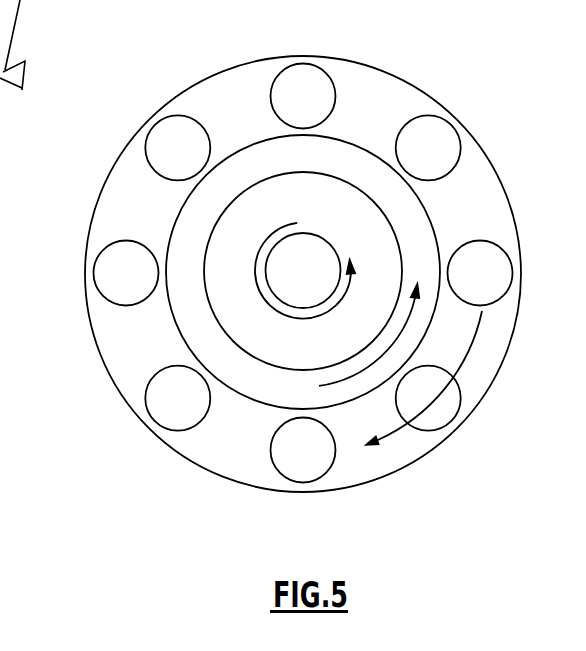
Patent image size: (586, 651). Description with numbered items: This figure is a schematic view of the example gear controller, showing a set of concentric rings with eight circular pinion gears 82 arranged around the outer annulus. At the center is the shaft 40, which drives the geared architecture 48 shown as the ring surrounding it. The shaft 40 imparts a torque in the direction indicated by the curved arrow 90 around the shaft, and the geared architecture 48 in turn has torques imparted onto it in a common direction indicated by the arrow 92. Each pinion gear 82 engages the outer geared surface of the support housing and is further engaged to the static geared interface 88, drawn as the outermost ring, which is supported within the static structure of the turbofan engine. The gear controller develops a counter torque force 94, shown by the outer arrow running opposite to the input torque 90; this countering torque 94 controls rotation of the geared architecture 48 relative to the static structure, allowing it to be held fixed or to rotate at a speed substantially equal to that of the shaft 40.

The shaft 40 is at (326, 242).
The geared architecture 48 is at (400, 247).
The pinion gear 82 is at (298, 72).
The static geared interface 88 is at (212, 473).
The input torque direction 90 is at (303, 320).
The common torque direction 92 is at (402, 330).
The counter torque force 94 is at (400, 430).